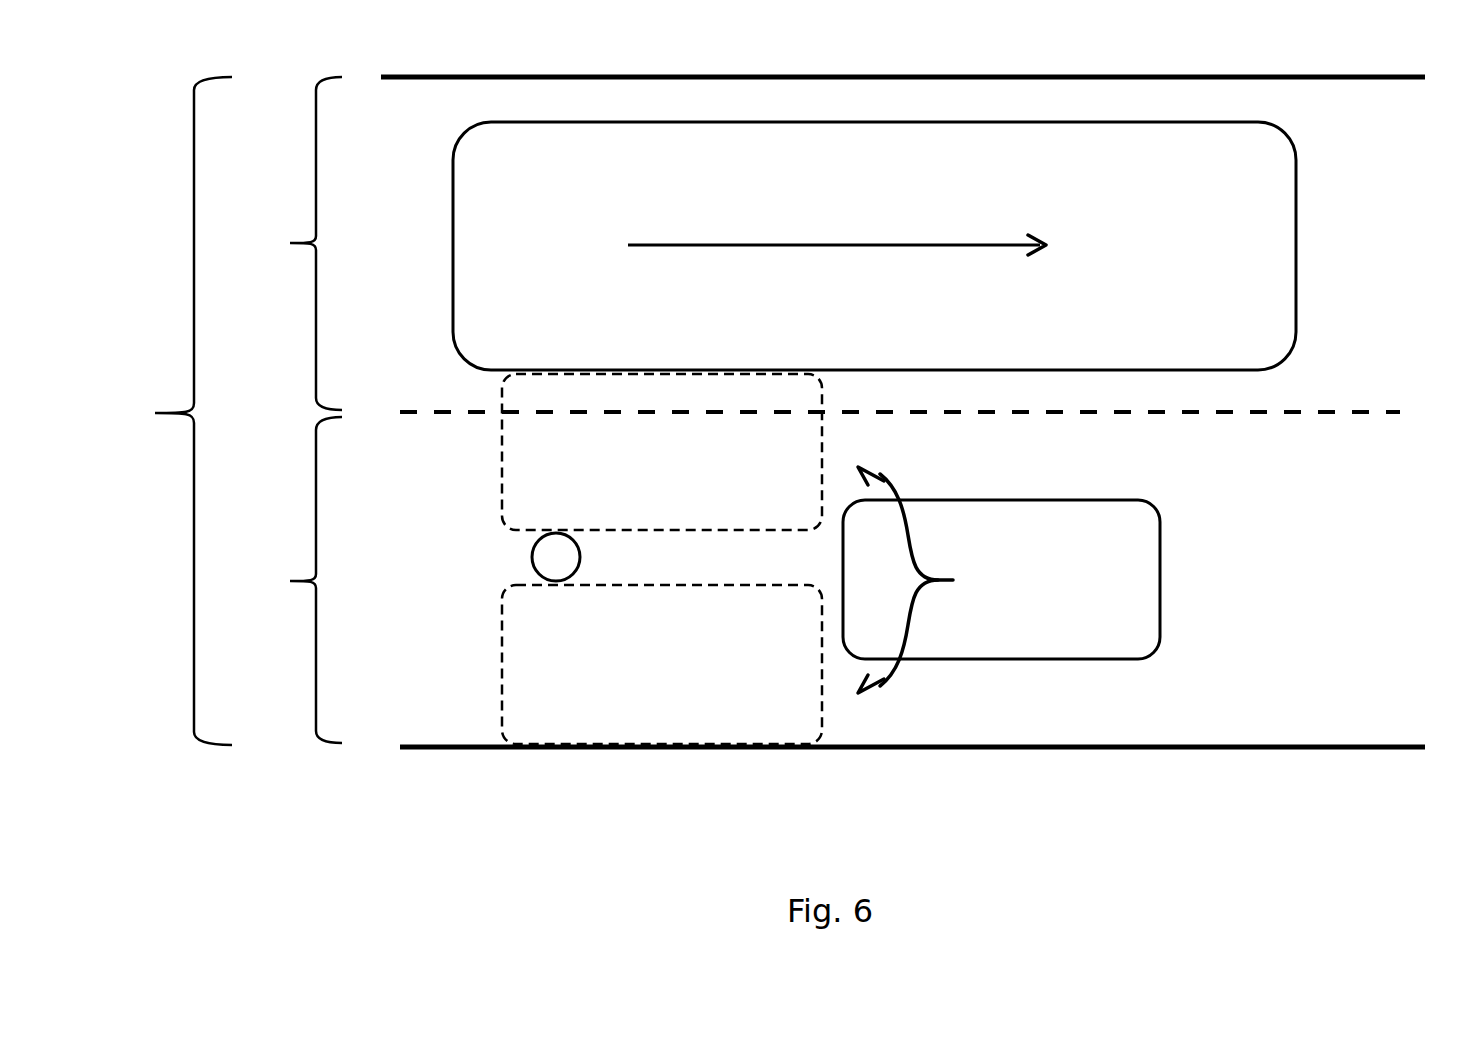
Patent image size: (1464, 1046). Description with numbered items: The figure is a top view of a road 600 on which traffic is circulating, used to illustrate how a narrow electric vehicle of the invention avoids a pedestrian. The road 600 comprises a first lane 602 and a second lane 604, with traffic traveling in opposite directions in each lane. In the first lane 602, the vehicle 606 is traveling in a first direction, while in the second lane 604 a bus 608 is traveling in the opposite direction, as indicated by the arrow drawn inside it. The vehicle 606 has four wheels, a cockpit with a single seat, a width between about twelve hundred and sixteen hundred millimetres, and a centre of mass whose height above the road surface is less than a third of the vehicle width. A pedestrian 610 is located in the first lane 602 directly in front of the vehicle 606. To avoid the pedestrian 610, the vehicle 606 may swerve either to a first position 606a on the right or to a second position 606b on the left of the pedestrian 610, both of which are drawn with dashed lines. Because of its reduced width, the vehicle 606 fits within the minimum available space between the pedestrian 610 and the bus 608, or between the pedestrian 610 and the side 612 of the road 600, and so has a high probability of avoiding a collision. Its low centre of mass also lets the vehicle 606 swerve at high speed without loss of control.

The road 600 is at (156, 411).
The first lane 602 is at (278, 580).
The second lane 604 is at (278, 243).
The vehicle 606 is at (1160, 580).
The first position 606a is at (502, 450).
The second position 606b is at (502, 665).
The bus 608 is at (1296, 245).
The pedestrian 610 is at (532, 557).
The side of the road 612 is at (828, 749).